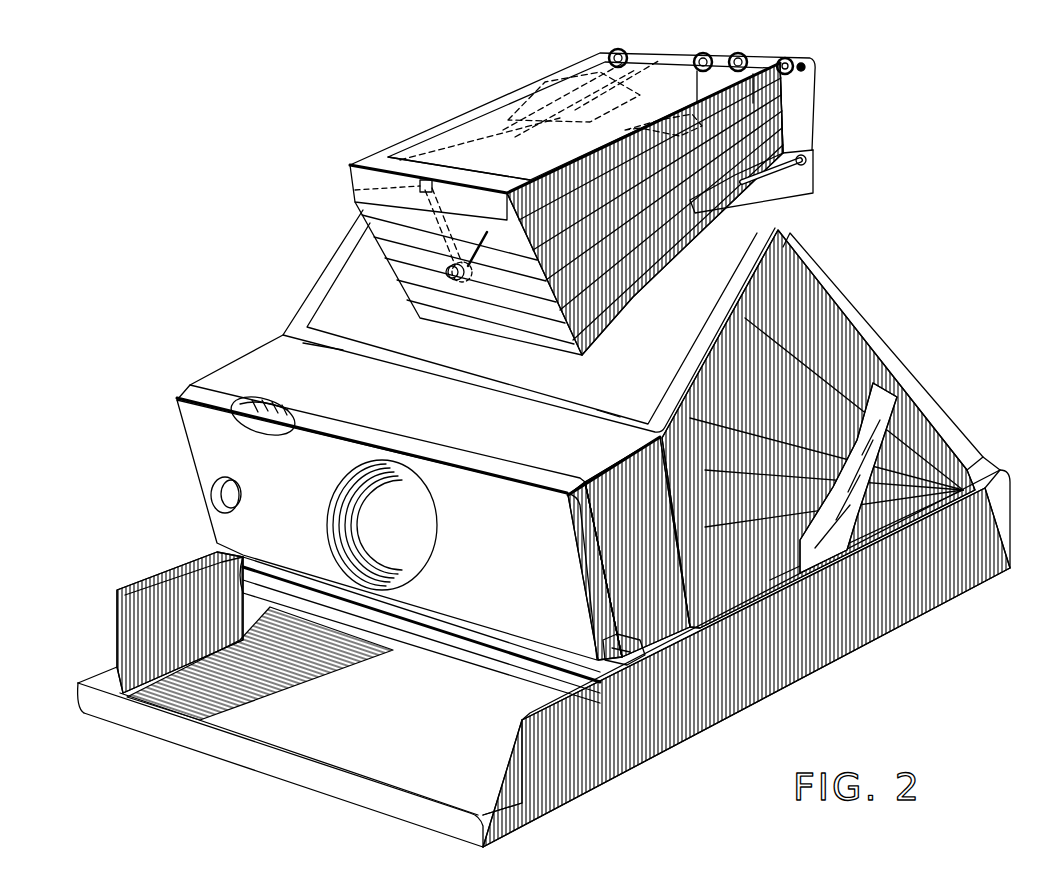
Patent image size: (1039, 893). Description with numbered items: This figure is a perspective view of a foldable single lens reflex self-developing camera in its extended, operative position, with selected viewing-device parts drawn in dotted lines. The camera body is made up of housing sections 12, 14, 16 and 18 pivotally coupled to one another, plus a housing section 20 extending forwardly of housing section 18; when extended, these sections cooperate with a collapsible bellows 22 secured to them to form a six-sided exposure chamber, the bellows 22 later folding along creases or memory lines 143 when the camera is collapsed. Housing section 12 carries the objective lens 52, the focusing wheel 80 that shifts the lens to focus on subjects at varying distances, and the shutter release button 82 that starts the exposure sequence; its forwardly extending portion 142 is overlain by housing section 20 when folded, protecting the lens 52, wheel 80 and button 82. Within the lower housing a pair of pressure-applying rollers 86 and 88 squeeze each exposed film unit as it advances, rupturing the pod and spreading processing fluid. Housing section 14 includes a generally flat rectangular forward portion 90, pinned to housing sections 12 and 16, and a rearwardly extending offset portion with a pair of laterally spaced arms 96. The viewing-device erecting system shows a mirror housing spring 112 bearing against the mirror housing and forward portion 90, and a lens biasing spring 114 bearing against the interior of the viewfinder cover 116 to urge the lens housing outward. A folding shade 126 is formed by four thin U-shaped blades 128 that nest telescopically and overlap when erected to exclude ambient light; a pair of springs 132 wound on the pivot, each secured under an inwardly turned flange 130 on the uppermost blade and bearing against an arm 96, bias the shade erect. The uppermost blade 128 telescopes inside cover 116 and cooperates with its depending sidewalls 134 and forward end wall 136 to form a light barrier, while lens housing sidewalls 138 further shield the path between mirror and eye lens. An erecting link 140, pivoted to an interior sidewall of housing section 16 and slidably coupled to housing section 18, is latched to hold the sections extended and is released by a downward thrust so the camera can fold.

The housing section 12 is at (419, 489).
The housing section 14 is at (290, 290).
The housing section 16 is at (902, 350).
The housing section 18 is at (918, 688).
The housing section 20 is at (667, 762).
The collapsible bellows 22 is at (713, 495).
The objective lens 52 is at (432, 532).
The focusing wheel 80 is at (268, 405).
The shutter release button 82 is at (215, 500).
The pressure-applying roller 86 is at (610, 648).
The pressure-applying roller 88 is at (507, 673).
The forward portion 90 is at (682, 267).
The arm 96 is at (625, 95).
The mirror housing spring 112 is at (467, 240).
The lens biasing spring 114 is at (745, 55).
The viewfinder cover 116 is at (400, 141).
The folding shade 126 is at (640, 298).
The blade 128 is at (460, 137).
The inwardly turned flange 130 is at (528, 95).
The spring 132 is at (620, 50).
The depending sidewall 134 is at (548, 170).
The forward end wall 136 is at (352, 180).
The sidewall 138 is at (812, 120).
The erecting link 140 is at (892, 408).
The forwardly extending portion 142 is at (515, 470).
The memory lines 143 is at (830, 370).